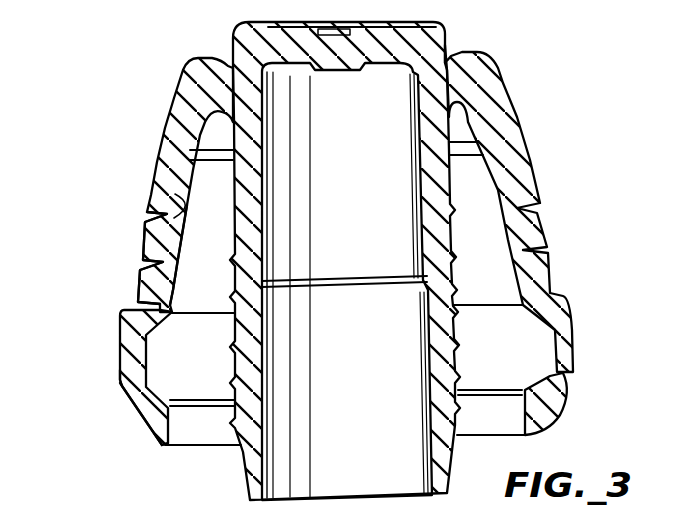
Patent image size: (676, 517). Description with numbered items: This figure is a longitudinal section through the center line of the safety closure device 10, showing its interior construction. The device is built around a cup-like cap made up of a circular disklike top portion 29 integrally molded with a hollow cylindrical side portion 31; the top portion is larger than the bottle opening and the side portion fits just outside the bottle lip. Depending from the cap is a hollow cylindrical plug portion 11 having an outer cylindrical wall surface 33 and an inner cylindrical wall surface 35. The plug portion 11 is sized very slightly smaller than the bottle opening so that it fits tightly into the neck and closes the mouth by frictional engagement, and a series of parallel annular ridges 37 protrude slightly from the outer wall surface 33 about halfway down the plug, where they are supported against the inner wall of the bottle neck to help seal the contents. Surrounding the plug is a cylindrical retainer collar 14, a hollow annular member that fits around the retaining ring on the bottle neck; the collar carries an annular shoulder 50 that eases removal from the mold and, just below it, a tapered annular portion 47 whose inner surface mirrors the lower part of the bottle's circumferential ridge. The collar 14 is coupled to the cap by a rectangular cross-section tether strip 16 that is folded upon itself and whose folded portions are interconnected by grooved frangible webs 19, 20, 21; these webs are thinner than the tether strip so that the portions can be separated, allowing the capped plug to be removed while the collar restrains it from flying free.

The safety closure device 10 is at (296, 256).
The plug portion 11 is at (253, 183).
The retainer collar 14 is at (104, 341).
The tether strip 16 is at (140, 290).
The frangible web 19 is at (158, 181).
The frangible web 20 is at (176, 298).
The frangible web 21 is at (185, 262).
The top portion 29 is at (231, 42).
The side portion 31 is at (183, 72).
The outer cylindrical wall surface 33 is at (234, 218).
The inner cylindrical wall surface 35 is at (255, 364).
The annular ridges 37 is at (233, 380).
The tapered annular portion 47 is at (130, 440).
The annular shoulder 50 is at (118, 392).